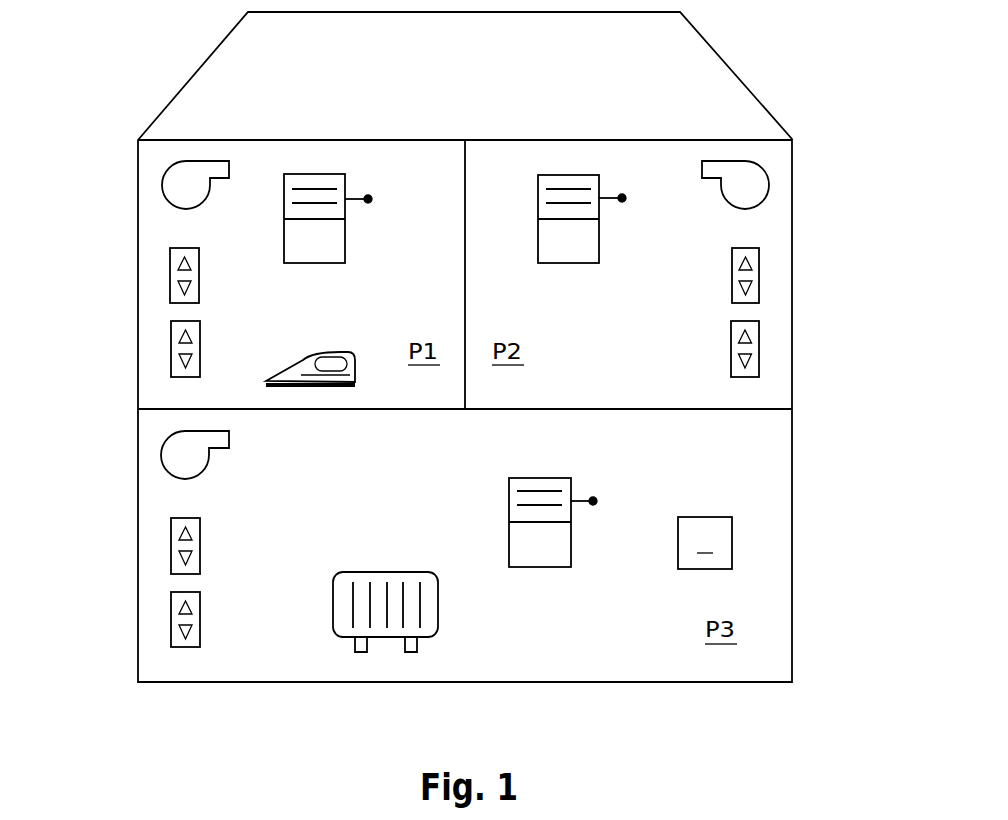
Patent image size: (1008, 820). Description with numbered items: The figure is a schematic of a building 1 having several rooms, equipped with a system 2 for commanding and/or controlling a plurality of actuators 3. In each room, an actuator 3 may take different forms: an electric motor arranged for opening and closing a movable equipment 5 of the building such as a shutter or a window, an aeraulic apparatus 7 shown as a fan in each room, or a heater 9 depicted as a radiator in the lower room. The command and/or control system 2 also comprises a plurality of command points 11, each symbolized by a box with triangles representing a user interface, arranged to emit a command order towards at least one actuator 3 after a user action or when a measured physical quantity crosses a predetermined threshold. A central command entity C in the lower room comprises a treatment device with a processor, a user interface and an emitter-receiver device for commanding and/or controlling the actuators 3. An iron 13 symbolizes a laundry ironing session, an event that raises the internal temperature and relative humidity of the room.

The building 1 is at (738, 73).
The command and/or control system 2 is at (706, 517).
The actuator 3 is at (372, 197).
The movable equipment 5 is at (315, 174).
The aeraulic apparatus 7 is at (172, 182).
The heater 9 is at (385, 572).
The command point 11 is at (172, 343).
The iron 13 is at (345, 352).